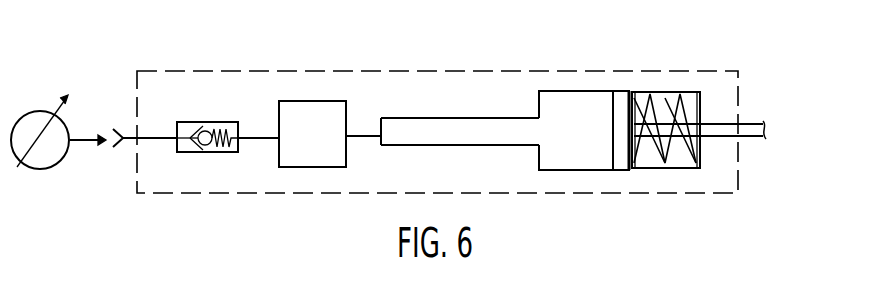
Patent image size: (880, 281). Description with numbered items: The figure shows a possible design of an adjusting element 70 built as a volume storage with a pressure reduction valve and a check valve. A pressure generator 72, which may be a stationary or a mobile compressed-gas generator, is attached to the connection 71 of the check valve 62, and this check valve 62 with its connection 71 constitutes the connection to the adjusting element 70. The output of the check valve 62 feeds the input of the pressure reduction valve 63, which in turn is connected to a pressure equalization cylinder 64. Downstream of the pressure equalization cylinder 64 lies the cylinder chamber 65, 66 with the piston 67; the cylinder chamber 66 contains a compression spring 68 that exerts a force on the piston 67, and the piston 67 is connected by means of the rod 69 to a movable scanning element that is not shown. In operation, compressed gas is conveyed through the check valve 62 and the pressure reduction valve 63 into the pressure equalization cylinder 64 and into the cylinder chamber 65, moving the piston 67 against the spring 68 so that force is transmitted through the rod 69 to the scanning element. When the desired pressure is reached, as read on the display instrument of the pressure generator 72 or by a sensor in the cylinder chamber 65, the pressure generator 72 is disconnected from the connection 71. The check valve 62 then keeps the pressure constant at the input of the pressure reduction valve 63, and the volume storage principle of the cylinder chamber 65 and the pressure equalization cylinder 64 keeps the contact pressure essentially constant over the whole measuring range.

The check valve 62 is at (224, 122).
The pressure reduction valve 63 is at (313, 110).
The pressure equalization cylinder 64 is at (431, 123).
The cylinder chamber 65 is at (572, 100).
The cylinder chamber 66 is at (665, 100).
The piston 67 is at (622, 100).
The compression spring 68 is at (668, 152).
The rod 69 is at (752, 133).
The adjusting element 70 is at (203, 71).
The connection 71 is at (127, 146).
The pressure generator 72 is at (58, 165).